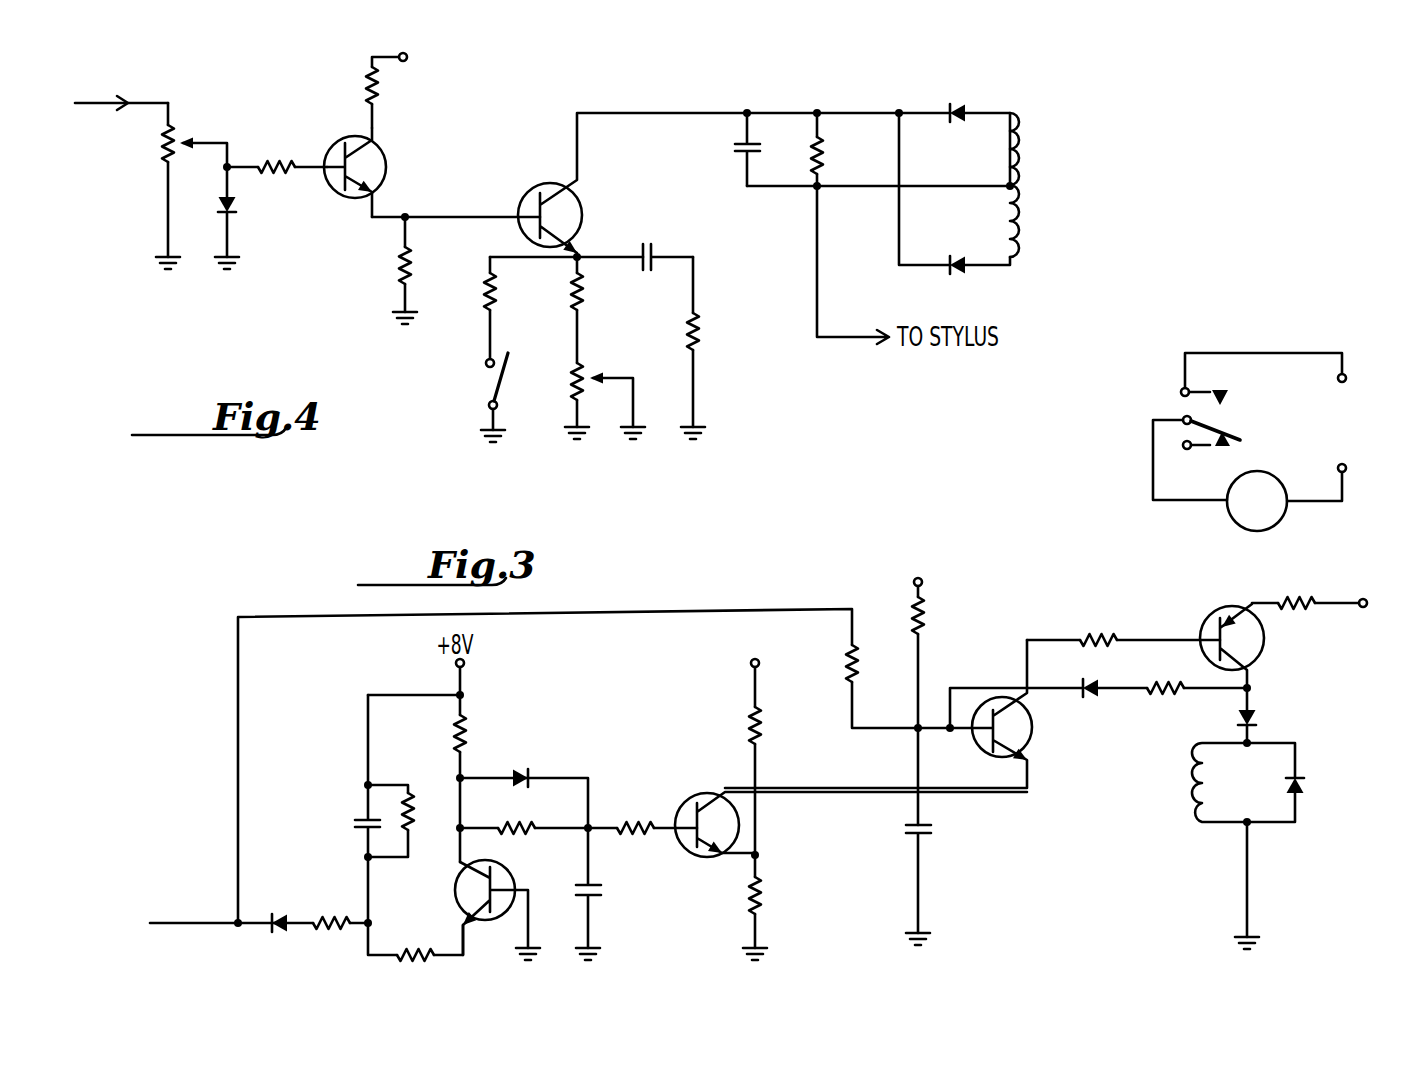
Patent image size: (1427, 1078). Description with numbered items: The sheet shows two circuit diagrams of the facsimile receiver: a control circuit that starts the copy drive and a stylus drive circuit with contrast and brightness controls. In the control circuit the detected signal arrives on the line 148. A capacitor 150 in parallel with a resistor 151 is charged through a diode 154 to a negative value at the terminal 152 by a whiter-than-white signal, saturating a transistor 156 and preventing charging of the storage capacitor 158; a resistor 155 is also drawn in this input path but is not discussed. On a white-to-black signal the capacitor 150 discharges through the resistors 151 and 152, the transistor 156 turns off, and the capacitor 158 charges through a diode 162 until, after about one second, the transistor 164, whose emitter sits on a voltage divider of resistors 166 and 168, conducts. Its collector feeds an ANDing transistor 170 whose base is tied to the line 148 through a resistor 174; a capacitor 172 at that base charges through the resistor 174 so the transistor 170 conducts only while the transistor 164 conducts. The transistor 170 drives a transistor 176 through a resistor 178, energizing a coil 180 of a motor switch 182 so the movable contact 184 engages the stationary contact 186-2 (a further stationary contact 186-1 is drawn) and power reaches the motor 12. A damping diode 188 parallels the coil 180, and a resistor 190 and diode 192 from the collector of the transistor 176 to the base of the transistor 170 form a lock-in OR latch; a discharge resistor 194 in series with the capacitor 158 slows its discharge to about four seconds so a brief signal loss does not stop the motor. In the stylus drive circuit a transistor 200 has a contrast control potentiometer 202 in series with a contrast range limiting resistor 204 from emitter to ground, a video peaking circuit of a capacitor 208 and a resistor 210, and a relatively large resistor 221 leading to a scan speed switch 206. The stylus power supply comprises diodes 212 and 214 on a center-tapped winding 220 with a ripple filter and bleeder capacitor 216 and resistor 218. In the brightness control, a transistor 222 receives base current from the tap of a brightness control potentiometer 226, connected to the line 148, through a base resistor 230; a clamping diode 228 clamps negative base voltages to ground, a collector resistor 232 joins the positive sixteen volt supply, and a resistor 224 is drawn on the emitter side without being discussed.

In FIG. 3, the motor 12 is at (1252, 510).
In FIG. 4, the line 148 is at (142, 102).
In FIG. 3, the line 148 is at (198, 922).
In FIG. 3, the capacitor 150 is at (360, 813).
In FIG. 3, the resistor 151 is at (411, 808).
In FIG. 3, the terminal 152 is at (403, 947).
In FIG. 3, the diode 154 is at (275, 910).
In FIG. 3, the resistor 155 is at (318, 913).
In FIG. 3, the transistor 156 is at (507, 873).
In FIG. 3, the storage capacitor 158 is at (600, 893).
In FIG. 3, the diode 162 is at (526, 765).
In FIG. 3, the transistor 164 is at (702, 810).
In FIG. 3, the resistor 166 is at (761, 723).
In FIG. 3, the resistor 168 is at (762, 893).
In FIG. 3, the ANDing transistor 170 is at (1021, 735).
In FIG. 3, the capacitor 172 is at (928, 833).
In FIG. 3, the resistor 174 is at (847, 663).
In FIG. 3, the transistor 176 is at (1244, 642).
In FIG. 3, the resistor 178 is at (1108, 628).
In FIG. 3, the coil 180 is at (1192, 777).
In FIG. 3, the motor switch 182 is at (1125, 410).
In FIG. 3, the movable contact 184 is at (1218, 428).
In FIG. 3, the switch contact 186-1 is at (1213, 443).
In FIG. 3, the stationary contact 186-2 is at (1210, 390).
In FIG. 3, the damping diode 188 is at (1304, 785).
In FIG. 3, the resistor 190 is at (1172, 696).
In FIG. 3, the diode 192 is at (1090, 703).
In FIG. 3, the discharge resistor 194 is at (520, 822).
In FIG. 4, the transistor 200 is at (530, 203).
In FIG. 4, the contrast control potentiometer 202 is at (592, 376).
In FIG. 4, the contrast range limiting resistor 204 is at (570, 283).
In FIG. 4, the scan speed switch 206 is at (490, 375).
In FIG. 4, the capacitor 208 is at (660, 250).
In FIG. 3, the capacitor 208 is at (923, 608).
In FIG. 4, the resistor 210 is at (700, 343).
In FIG. 4, the diode 212 is at (959, 103).
In FIG. 4, the diode 214 is at (957, 257).
In FIG. 4, the capacitor 216 is at (733, 148).
In FIG. 4, the resistor 218 is at (827, 157).
In FIG. 4, the winding 220 is at (1023, 147).
In FIG. 4, the resistor 221 is at (483, 298).
In FIG. 4, the transistor 222 is at (373, 158).
In FIG. 4, the resistor 224 is at (400, 262).
In FIG. 4, the brightness control potentiometer 226 is at (161, 147).
In FIG. 4, the clamping diode 228 is at (237, 208).
In FIG. 4, the base resistor 230 is at (278, 158).
In FIG. 4, the collector resistor 232 is at (378, 92).